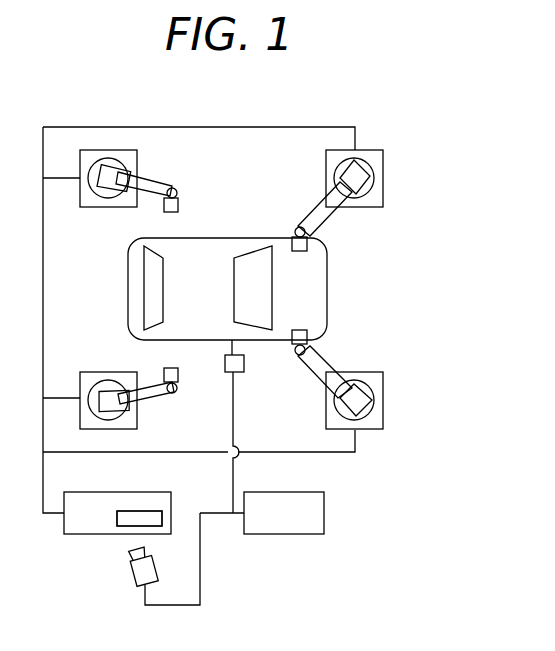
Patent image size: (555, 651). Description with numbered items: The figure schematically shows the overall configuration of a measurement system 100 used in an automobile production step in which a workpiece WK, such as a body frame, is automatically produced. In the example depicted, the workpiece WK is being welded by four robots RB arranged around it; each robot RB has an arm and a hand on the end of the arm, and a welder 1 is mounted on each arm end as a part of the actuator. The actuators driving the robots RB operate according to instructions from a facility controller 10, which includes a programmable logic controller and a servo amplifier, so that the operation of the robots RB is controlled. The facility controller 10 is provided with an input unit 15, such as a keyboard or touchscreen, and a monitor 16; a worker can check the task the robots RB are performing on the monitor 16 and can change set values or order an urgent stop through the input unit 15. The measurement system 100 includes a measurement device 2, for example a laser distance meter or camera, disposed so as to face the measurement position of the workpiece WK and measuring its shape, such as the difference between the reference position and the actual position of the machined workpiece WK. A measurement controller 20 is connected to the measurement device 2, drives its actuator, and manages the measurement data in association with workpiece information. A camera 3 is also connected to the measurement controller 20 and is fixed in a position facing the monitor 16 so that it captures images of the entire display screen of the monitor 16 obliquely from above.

The measurement system 100 is at (422, 103).
The robot RB is at (137, 157).
The welder 1 is at (180, 206).
The workpiece WK is at (328, 272).
The measurement device 2 is at (245, 365).
The facility controller 10 is at (143, 492).
The input unit 15 is at (124, 527).
The monitor 16 is at (139, 518).
The measurement controller 20 is at (298, 492).
The camera 3 is at (158, 570).